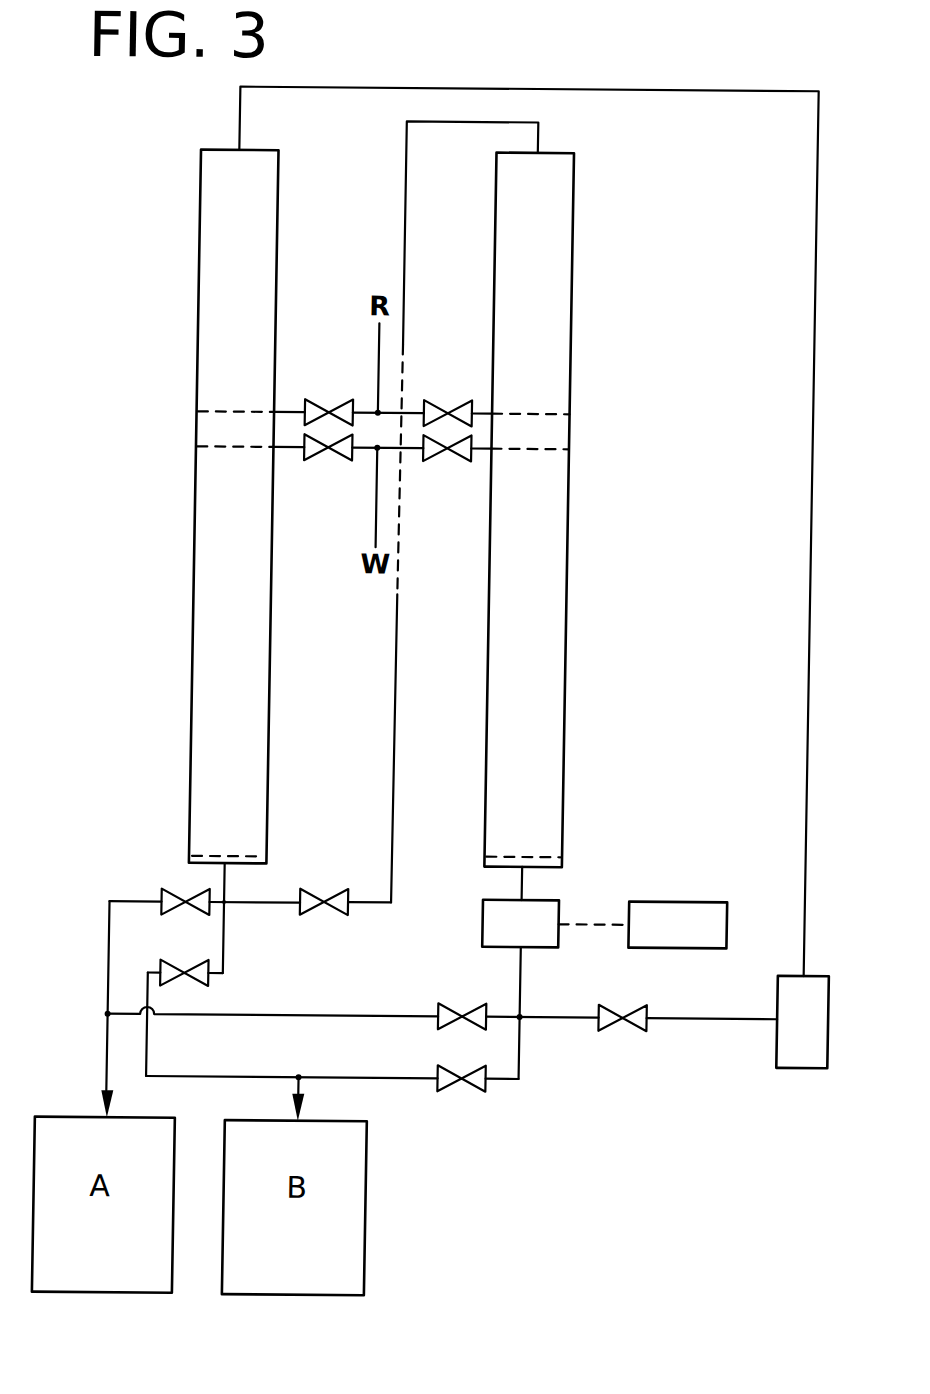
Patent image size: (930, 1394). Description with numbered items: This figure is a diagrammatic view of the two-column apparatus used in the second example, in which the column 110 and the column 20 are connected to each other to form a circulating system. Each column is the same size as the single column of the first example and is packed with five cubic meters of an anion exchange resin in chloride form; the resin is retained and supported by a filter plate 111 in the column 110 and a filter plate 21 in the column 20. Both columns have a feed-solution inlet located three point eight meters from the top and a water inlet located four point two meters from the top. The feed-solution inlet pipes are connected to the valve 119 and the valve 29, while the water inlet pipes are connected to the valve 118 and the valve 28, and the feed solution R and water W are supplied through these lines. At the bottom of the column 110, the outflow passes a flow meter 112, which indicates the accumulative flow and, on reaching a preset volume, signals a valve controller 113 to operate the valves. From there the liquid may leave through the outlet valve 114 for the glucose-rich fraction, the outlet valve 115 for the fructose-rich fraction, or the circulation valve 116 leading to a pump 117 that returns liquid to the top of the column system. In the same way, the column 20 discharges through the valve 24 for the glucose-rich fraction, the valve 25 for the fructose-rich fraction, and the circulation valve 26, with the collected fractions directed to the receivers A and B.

The column 20 is at (234, 507).
The filter plate 21 is at (236, 848).
The valve for (a) fraction outlet 24 is at (175, 891).
The valve for (c) fraction outlet 25 is at (185, 962).
The circulation valve 26 is at (338, 917).
The water inlet valve 28 is at (327, 462).
The feed-solution inlet valve 29 is at (320, 400).
The column 110 is at (529, 510).
The filter plate 111 is at (530, 848).
The flow meter 112 is at (486, 925).
The valve controller 113 is at (678, 899).
The outlet valve for (a) fraction 114 is at (455, 1004).
The outlet valve for (c) fraction 115 is at (462, 1093).
The circulation valve 116 is at (625, 1029).
The pump 117 is at (782, 1038).
The water inlet valve 118 is at (449, 462).
The feed-solution inlet valve 119 is at (437, 400).